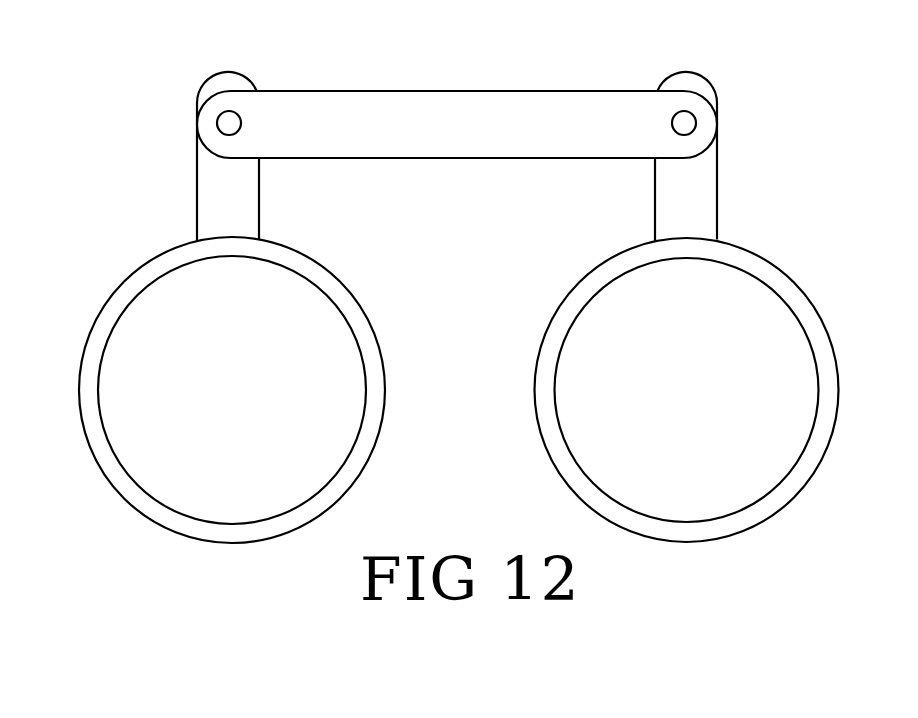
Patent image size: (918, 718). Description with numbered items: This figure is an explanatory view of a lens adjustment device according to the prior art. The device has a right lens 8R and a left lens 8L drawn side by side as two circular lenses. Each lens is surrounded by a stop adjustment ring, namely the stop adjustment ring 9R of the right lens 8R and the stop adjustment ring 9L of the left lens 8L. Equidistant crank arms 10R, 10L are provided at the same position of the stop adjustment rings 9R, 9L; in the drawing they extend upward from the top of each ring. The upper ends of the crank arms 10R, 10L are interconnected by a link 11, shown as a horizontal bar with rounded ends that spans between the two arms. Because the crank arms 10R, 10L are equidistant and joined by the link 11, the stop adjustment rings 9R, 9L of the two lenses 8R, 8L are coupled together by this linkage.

The link 11 is at (427, 102).
The crank arm 10R is at (196, 185).
The crank arm 10L is at (712, 189).
The right lens 8R is at (160, 308).
The left lens 8L is at (752, 302).
The stop adjustment ring 9R is at (80, 383).
The stop adjustment ring 9L is at (820, 318).